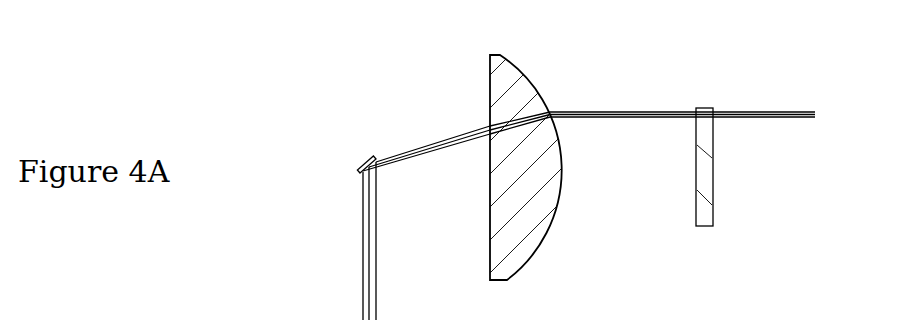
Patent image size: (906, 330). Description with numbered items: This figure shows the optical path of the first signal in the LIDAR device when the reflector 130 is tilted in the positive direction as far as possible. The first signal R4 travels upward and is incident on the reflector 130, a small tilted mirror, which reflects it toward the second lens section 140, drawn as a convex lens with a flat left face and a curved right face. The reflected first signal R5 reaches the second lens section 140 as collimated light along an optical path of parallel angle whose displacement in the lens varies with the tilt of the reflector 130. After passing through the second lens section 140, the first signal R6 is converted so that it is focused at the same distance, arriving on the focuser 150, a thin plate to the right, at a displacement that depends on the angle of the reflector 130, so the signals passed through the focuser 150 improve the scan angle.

The reflector 130 is at (360, 171).
The second lens section 140 is at (500, 54).
The focuser 150 is at (705, 108).
The first signal R4 is at (354, 241).
The first signal R5 is at (426, 146).
The first signal R6 is at (682, 104).